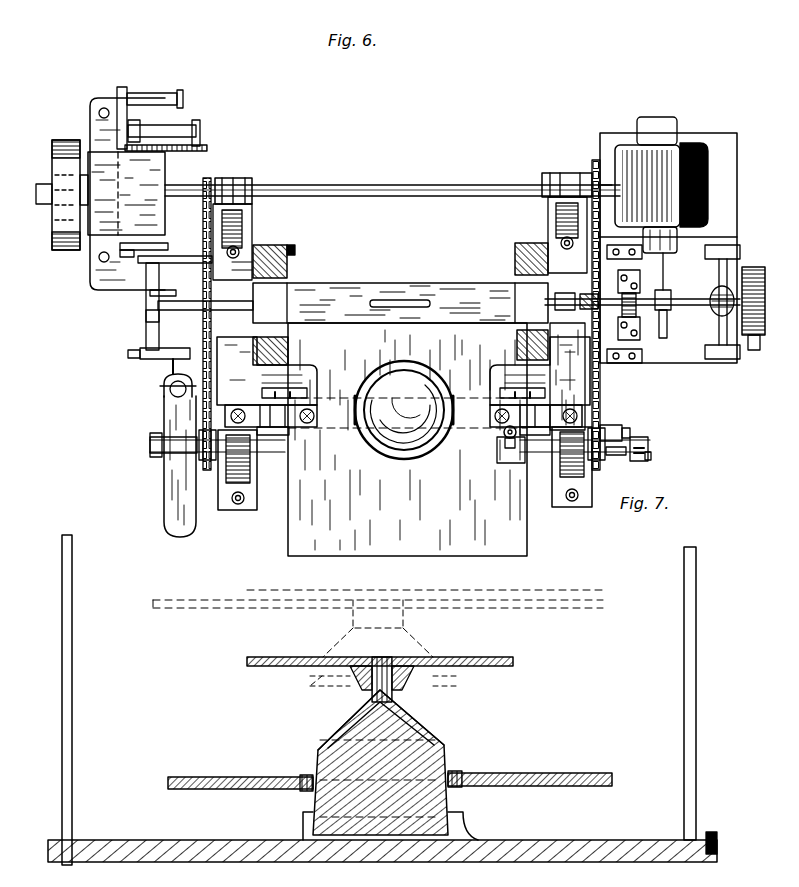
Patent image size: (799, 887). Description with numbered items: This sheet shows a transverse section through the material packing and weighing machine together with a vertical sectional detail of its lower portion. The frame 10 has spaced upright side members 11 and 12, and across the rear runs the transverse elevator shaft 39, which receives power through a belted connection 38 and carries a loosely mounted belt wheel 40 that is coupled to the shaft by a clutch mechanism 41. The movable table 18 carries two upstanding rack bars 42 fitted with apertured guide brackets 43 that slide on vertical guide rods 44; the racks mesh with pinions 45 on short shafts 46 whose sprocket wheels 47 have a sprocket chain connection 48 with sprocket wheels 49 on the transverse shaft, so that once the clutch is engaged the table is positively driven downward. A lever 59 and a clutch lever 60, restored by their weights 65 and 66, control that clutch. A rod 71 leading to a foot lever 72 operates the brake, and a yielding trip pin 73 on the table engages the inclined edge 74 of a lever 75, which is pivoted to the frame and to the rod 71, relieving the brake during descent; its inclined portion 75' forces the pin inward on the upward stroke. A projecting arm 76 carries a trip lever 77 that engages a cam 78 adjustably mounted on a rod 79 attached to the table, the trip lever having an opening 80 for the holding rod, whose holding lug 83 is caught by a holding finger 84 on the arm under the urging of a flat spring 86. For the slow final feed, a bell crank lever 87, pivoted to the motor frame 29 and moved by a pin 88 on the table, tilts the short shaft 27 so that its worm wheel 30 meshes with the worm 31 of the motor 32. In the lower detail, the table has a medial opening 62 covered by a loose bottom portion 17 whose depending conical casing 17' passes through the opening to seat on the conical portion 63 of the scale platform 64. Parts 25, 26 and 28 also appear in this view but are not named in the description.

In FIG. 6, the frame 10 is at (290, 283).
In FIG. 6, the forward upright side member 11 is at (288, 352).
In FIG. 6, the rearward upright side member 12 is at (268, 246).
In FIG. 7, the loose bottom portion 17 is at (378, 628).
In FIG. 7, the depending conical casing 17' is at (395, 720).
In FIG. 6, the movable table 18 is at (288, 525).
In FIG. 7, the movable table 18 is at (605, 593).
In FIG. 6, the hub 25 is at (755, 336).
In FIG. 6, the gear 26 is at (755, 265).
In FIG. 6, the short shaft 27 is at (690, 299).
In FIG. 6, the gear 28 is at (718, 305).
In FIG. 6, the motor frame 29 is at (723, 135).
In FIG. 6, the worm wheel 30 is at (668, 330).
In FIG. 6, the worm 31 is at (668, 303).
In FIG. 6, the motor 32 is at (632, 157).
In FIG. 6, the belted connection 38 is at (62, 250).
In FIG. 6, the elevator shaft 39 is at (322, 184).
In FIG. 6, the belt wheel 40 is at (57, 170).
In FIG. 6, the clutch mechanism 41 is at (126, 193).
In FIG. 6, the rack bars 42 is at (286, 435).
In FIG. 6, the guide brackets 43 is at (313, 403).
In FIG. 6, the guide rods 44 is at (228, 420).
In FIG. 6, the pinions 45 is at (273, 448).
In FIG. 6, the short shafts 46 is at (190, 443).
In FIG. 6, the sprocket wheels 47 is at (210, 463).
In FIG. 6, the sprocket chain connection 48 is at (203, 334).
In FIG. 6, the sprocket wheels 49 is at (214, 184).
In FIG. 6, the lever 59 is at (180, 256).
In FIG. 6, the clutch lever 60 is at (125, 257).
In FIG. 7, the medial opening 62 is at (458, 773).
In FIG. 6, the conical portion 63 is at (408, 447).
In FIG. 7, the conical portion 63 is at (455, 744).
In FIG. 6, the scale platform 64 is at (358, 426).
In FIG. 7, the scale platform 64 is at (497, 838).
In FIG. 6, the weight 65 is at (140, 128).
In FIG. 6, the weight 66 is at (183, 96).
In FIG. 6, the rod 71 is at (168, 383).
In FIG. 6, the foot lever 72 is at (168, 504).
In FIG. 6, the yielding trip pin 73 is at (181, 301).
In FIG. 6, the inclined edge 74 is at (152, 292).
In FIG. 6, the lever 75 is at (145, 311).
In FIG. 6, the inclined portion 75' is at (121, 319).
In FIG. 6, the projecting arm 76 is at (567, 334).
In FIG. 6, the trip lever 77 is at (512, 450).
In FIG. 6, the cam 78 is at (503, 432).
In FIG. 6, the rod 79 is at (506, 441).
In FIG. 6, the opening 80 is at (649, 458).
In FIG. 6, the holding lug 83 is at (632, 440).
In FIG. 6, the holding finger 84 is at (620, 455).
In FIG. 6, the flat spring 86 is at (642, 452).
In FIG. 6, the bell crank lever 87 is at (588, 300).
In FIG. 6, the pin 88 is at (560, 300).